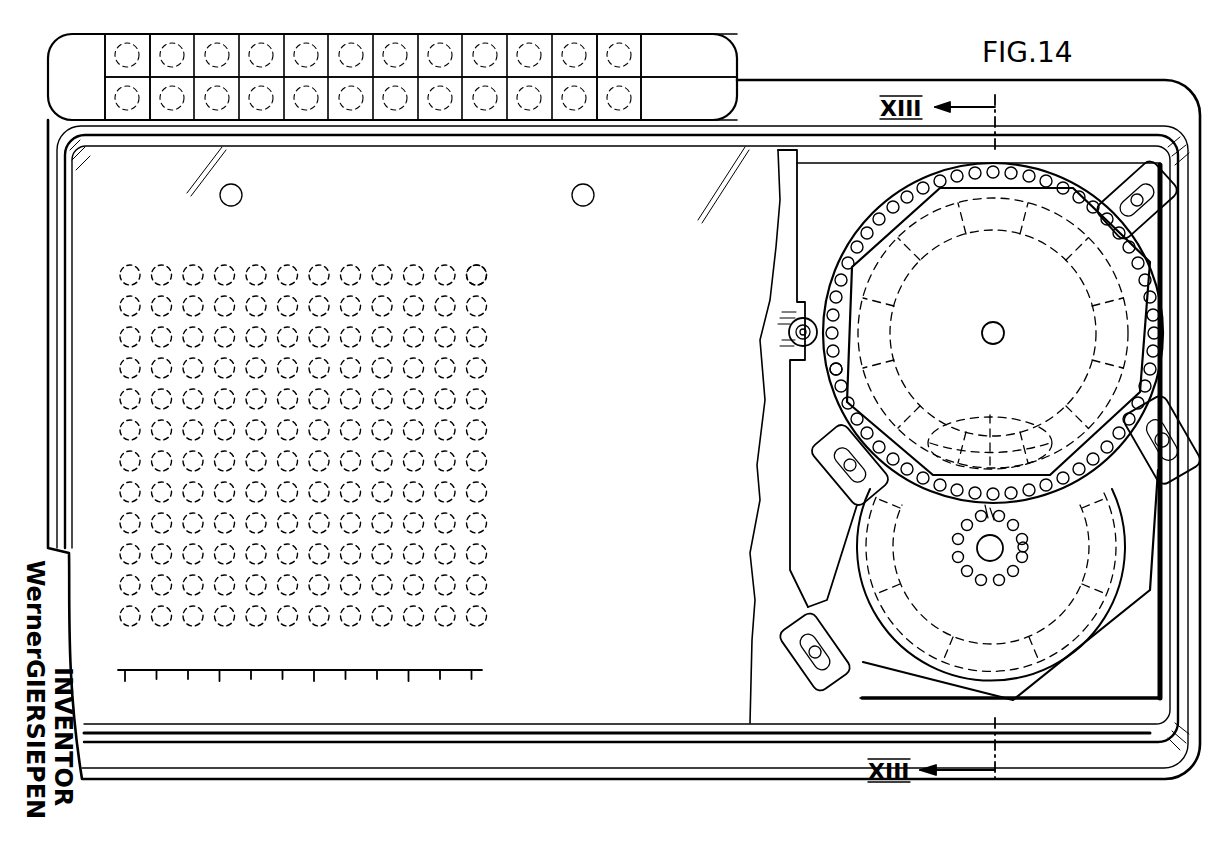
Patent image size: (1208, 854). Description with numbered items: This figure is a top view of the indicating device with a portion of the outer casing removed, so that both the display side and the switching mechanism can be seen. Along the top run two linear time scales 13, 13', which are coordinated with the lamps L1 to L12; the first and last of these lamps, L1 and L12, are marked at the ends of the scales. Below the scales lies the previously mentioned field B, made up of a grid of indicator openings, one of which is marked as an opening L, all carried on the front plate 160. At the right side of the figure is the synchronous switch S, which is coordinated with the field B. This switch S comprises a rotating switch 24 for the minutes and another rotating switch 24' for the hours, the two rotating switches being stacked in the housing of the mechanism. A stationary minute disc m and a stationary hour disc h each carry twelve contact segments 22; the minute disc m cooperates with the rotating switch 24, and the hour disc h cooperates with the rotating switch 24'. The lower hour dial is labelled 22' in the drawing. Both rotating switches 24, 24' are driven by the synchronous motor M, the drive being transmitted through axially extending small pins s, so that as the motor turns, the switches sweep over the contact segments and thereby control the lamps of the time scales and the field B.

The linear time scale 13 is at (398, 55).
The linear time scale 13' is at (398, 98).
The lamp L1 is at (137, 100).
The lamp L12 is at (618, 110).
The field B is at (401, 252).
The indicator opening L is at (492, 275).
The front plate 160 is at (634, 436).
The synchronous motor M is at (780, 253).
The synchronous switch S is at (865, 190).
The rotating switch 24 is at (994, 333).
The contact segment 22 is at (993, 334).
The stationary minute disc m is at (1064, 325).
The small pin s is at (830, 378).
The hour dial disc 22' is at (991, 585).
The rotating switch 24' is at (990, 546).
The stationary hour disc h is at (1090, 652).